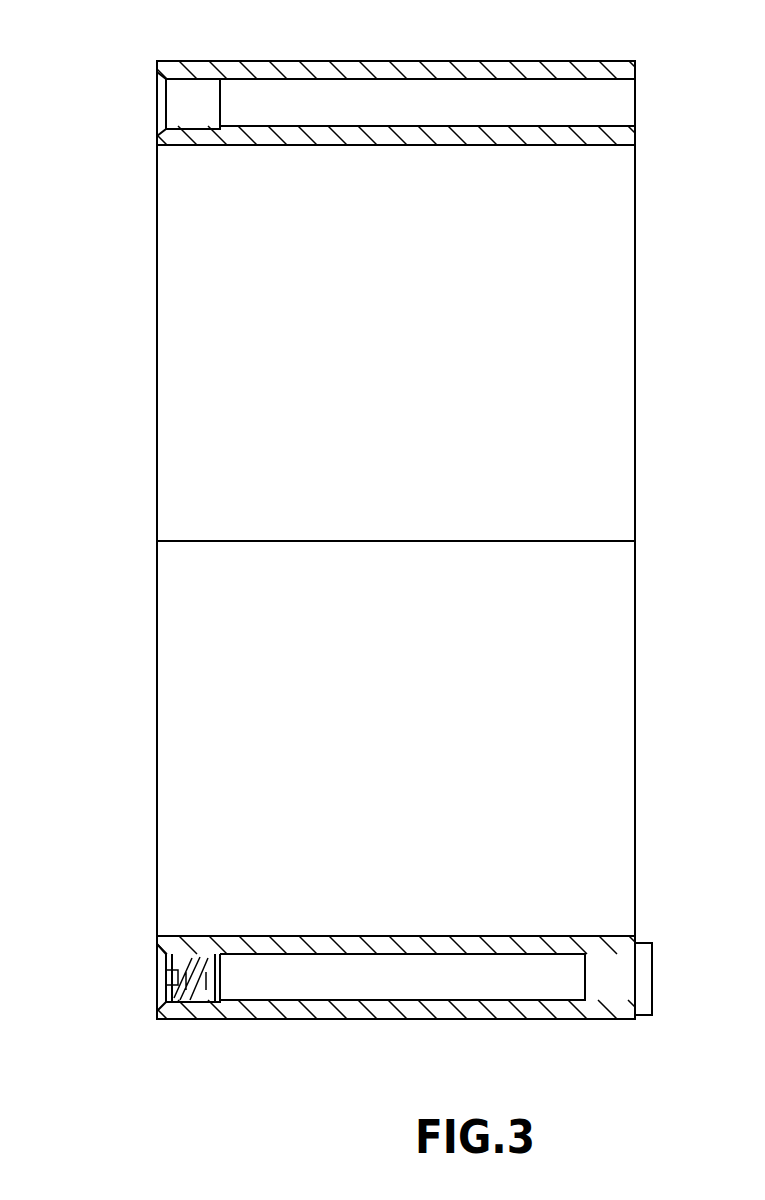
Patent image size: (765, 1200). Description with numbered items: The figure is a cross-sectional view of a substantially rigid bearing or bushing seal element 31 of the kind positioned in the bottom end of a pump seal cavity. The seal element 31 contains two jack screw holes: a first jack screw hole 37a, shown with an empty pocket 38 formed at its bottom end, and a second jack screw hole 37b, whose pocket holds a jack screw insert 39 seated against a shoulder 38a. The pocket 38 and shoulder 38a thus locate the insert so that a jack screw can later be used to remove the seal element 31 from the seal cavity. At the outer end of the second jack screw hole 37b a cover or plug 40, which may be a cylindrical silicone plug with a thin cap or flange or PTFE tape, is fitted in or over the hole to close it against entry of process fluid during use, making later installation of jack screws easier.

The seal element 31 is at (133, 298).
The first jack screw hole 37a is at (613, 92).
The second jack screw hole 37b is at (495, 985).
The pocket 38 is at (187, 90).
The shoulder 38a is at (211, 78).
The jack screw insert 39 is at (184, 996).
The plug 40 is at (653, 962).